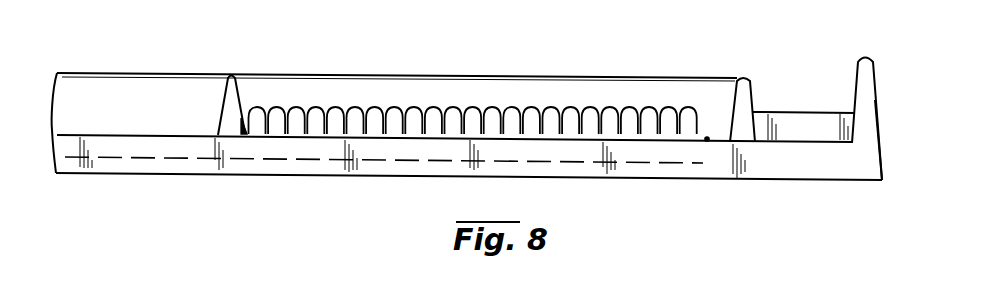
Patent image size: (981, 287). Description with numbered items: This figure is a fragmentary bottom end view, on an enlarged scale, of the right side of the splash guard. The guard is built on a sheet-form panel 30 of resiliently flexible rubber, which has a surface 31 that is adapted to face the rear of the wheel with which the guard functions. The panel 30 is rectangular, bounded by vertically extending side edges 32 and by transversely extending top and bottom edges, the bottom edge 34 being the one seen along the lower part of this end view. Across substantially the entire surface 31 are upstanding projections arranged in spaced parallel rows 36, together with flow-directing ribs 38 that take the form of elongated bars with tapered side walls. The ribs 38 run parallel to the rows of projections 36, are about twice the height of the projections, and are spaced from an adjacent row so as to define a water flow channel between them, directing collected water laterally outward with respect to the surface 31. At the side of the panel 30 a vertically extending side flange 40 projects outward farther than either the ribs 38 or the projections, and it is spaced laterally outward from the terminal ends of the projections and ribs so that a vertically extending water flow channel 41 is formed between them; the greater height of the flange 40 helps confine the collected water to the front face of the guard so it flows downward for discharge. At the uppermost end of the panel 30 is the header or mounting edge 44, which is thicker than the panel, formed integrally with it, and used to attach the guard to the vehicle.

The sheet-form panel 30 is at (773, 170).
The surface 31 is at (712, 143).
The side edges 32 is at (882, 166).
The bottom edge 34 is at (243, 168).
The rows of projections 36 is at (323, 103).
The flow-directing ribs 38 is at (277, 90).
The side flanges 40 is at (878, 80).
The water flow channel 41 is at (817, 135).
The header or mounting edge 44 is at (778, 110).